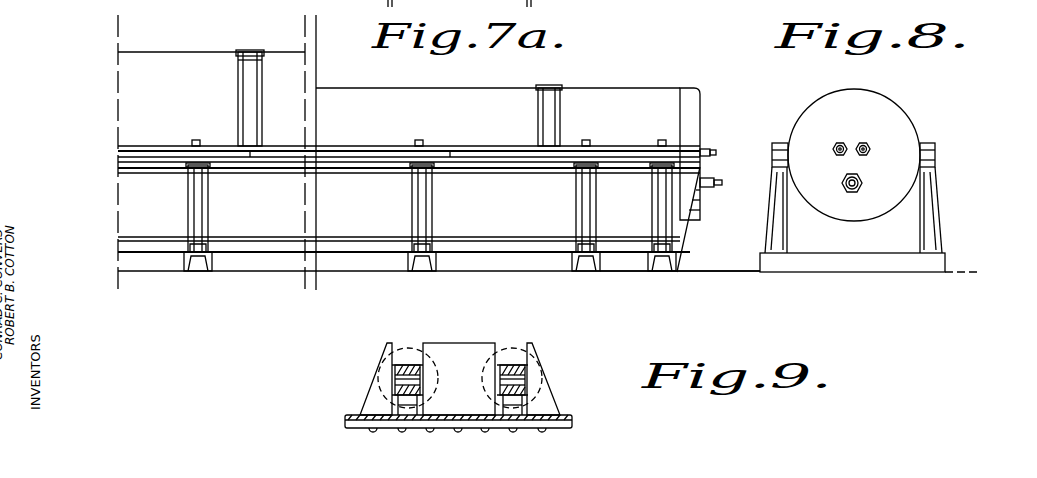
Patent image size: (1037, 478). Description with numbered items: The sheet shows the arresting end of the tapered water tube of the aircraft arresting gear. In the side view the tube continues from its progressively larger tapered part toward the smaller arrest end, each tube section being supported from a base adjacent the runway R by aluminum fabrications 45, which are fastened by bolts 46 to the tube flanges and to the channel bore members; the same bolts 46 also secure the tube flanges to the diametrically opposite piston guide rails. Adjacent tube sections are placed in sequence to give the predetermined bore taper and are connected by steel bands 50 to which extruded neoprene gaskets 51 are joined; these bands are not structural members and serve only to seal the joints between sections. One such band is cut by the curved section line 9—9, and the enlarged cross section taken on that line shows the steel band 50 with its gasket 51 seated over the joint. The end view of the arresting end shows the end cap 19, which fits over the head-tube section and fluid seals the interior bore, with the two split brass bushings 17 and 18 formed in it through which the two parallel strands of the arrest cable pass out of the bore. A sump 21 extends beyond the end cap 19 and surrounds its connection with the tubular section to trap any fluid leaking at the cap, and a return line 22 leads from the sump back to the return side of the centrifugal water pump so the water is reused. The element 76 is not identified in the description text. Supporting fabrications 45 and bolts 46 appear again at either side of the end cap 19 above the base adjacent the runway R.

In FIG. 7A, the trough / upright post 76 is at (147, 62).
In FIG. 7A, the extruded neoprene gasket 51 is at (238, 92).
In FIG. 9, the extruded neoprene gasket 51 is at (353, 414).
In FIG. 7A, the bolt 46 is at (210, 126).
In FIG. 8, the bolt 46 is at (780, 143).
In FIG. 7A, the aluminum fabrication 45 is at (192, 213).
In FIG. 8, the aluminum fabrication 45 is at (930, 217).
In FIG. 7A, the return line 22 is at (718, 187).
In FIG. 8, the return line 22 is at (848, 190).
In FIG. 7A, the split brass bushing 17 is at (703, 147).
In FIG. 8, the split brass bushing 17 is at (834, 147).
In FIG. 8, the split brass bushing 18 is at (878, 141).
In FIG. 8, the sump 21 is at (893, 118).
In FIG. 8, the end cap 19 is at (878, 207).
In FIG. 7A, the steel band 50 is at (245, 50).
In FIG. 9, the steel band 50 is at (437, 413).
In FIG. 7A, the section line 9— 9 is at (273, 62).
In FIG. 7A, the runway R is at (683, 270).
In FIG. 8, the runway R is at (967, 272).